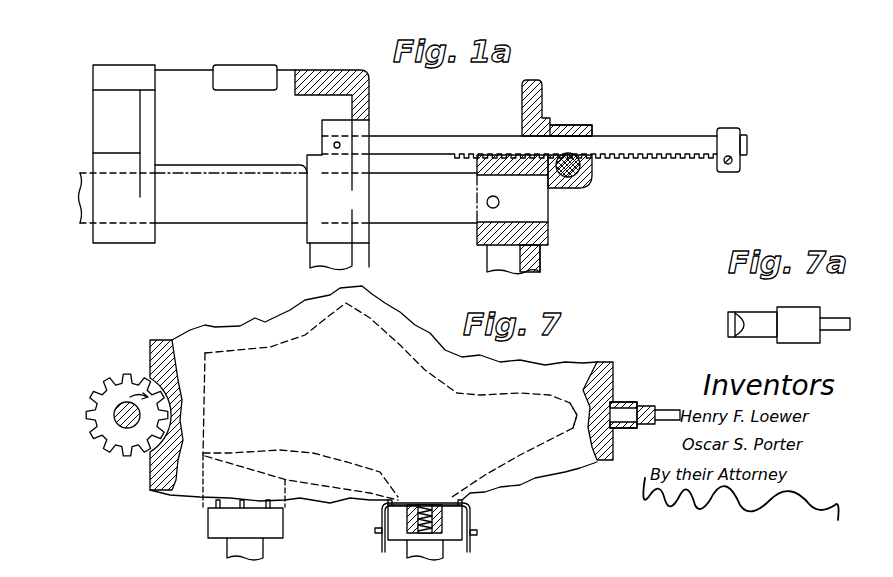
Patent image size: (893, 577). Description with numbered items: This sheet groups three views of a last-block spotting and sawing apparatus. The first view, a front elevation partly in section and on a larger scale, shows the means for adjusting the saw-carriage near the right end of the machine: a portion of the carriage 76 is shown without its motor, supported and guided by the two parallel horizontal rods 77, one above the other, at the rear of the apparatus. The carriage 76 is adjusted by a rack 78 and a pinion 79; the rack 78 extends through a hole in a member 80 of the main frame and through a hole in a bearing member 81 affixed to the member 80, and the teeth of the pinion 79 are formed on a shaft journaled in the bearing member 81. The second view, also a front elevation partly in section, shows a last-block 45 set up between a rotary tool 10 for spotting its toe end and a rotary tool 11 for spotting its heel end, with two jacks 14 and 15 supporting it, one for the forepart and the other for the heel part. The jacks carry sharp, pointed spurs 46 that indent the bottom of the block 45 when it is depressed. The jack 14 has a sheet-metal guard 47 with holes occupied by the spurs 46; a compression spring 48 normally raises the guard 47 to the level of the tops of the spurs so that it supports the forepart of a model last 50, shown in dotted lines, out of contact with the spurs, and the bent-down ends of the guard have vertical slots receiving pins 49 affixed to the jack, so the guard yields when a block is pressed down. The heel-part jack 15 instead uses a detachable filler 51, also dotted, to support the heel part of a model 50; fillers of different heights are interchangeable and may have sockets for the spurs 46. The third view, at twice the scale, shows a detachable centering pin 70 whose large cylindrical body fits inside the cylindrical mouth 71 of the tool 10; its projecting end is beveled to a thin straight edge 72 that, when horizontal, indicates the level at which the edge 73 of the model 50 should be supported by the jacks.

In FIG. 7, the rotary tool 10 is at (623, 410).
In FIG. 7, the rotary tool 11 is at (124, 378).
In FIG. 7, the jack 14 is at (407, 554).
In FIG. 7, the jack 15 is at (227, 551).
In FIG. 7, the last-block 45 is at (191, 334).
In FIG. 7, the spurs 46 is at (243, 500).
In FIG. 7, the sheet-metal guard 47 is at (411, 504).
In FIG. 7, the compression spring 48 is at (428, 528).
In FIG. 7, the pins 49 is at (376, 530).
In FIG. 7, the model last 50 is at (465, 388).
In FIG. 7, the detachable filler 51 is at (203, 481).
In FIG. 7a, the centering pin 70 is at (813, 325).
In FIG. 7, the mouth 71 is at (637, 414).
In FIG. 7a, the straight edge 72 is at (728, 318).
In FIG. 7, the edge 73 is at (575, 424).
In FIG. 1a, the carriage 76 is at (180, 76).
In FIG. 1a, the horizontal rods 77 is at (237, 213).
In FIG. 1a, the rack 78 is at (653, 157).
In FIG. 1a, the pinion 79 is at (582, 178).
In FIG. 1a, the frame member 80 is at (521, 100).
In FIG. 1a, the bearing member 81 is at (566, 126).